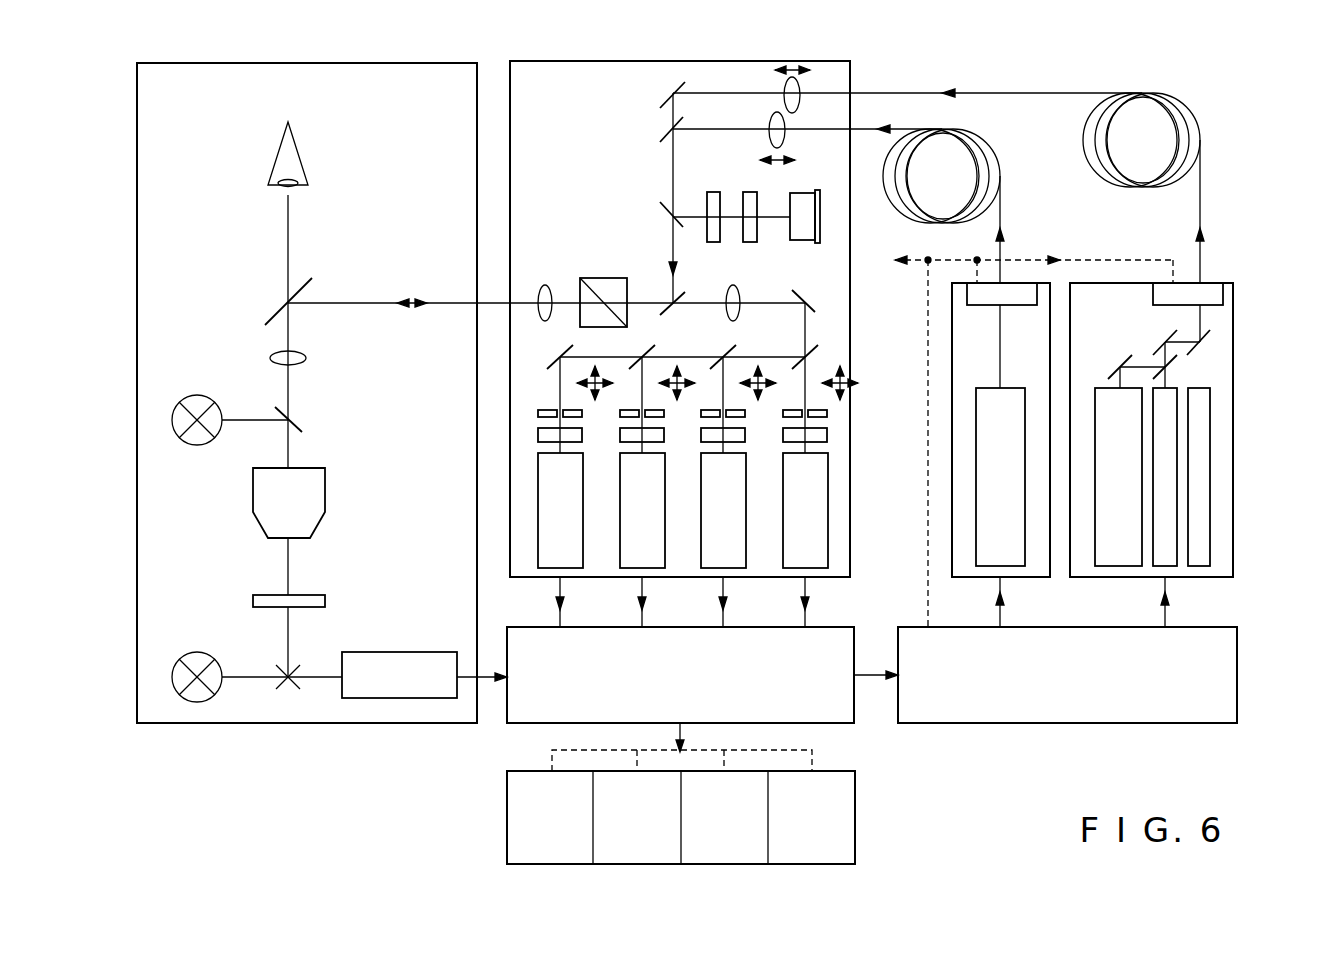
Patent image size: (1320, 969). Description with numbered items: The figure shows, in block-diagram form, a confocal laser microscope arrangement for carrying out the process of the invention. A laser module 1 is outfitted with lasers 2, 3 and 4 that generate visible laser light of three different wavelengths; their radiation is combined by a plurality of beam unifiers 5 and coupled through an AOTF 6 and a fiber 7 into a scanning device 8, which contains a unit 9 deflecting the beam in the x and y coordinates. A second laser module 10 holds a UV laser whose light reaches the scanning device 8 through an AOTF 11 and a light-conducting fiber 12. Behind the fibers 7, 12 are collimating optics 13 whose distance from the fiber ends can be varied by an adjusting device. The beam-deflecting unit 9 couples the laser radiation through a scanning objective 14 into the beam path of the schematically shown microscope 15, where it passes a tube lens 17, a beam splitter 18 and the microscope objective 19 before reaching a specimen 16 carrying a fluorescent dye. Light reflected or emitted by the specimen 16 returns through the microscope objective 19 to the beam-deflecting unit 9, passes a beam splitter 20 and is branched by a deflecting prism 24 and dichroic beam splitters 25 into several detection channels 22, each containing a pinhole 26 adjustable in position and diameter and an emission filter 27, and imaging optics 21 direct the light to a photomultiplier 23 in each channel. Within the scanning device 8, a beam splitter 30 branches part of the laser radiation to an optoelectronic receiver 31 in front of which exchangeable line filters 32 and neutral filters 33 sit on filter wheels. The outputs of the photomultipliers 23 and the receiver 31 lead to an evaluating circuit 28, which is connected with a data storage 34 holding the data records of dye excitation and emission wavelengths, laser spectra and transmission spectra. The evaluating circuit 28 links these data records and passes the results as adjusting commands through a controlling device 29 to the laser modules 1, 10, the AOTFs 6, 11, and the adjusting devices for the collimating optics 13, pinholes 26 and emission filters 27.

The laser module 1 is at (1234, 566).
The laser 2 is at (1212, 500).
The laser 3 is at (1173, 487).
The laser 4 is at (1110, 558).
The beam unifiers 5 is at (1158, 346).
The AOTF 6 is at (1215, 292).
The fiber 7 is at (988, 90).
The scanning device 8 is at (572, 63).
The beam-deflecting unit 9 is at (607, 278).
The second laser module 10 is at (987, 560).
The AOTF 11 is at (980, 303).
The light-conducting fiber 12 is at (998, 160).
The collimating optics 13 is at (770, 118).
The scanning objective 14 is at (547, 285).
The microscope 15 is at (283, 68).
The specimen 16 is at (325, 603).
The tube lens 17 is at (306, 358).
The beam splitter 18 is at (300, 421).
The microscope objective 19 is at (327, 512).
The beam splitter 20 is at (670, 308).
The imaging optics 21 is at (740, 315).
The detection channels 22 is at (558, 393).
The photomultipliers 23 is at (683, 510).
The deflecting prism 24 is at (817, 312).
The dichroic beam splitters 25 is at (813, 345).
The pinholes 26 is at (828, 413).
The emission filters 27 is at (828, 435).
The evaluating circuit 28 is at (702, 689).
The controlling device 29 is at (1067, 650).
The beam splitter 30 is at (663, 208).
The optoelectronic receiver 31 is at (800, 242).
The line filters 32 is at (712, 192).
The neutral filters 33 is at (747, 242).
The data storage 34 is at (507, 814).